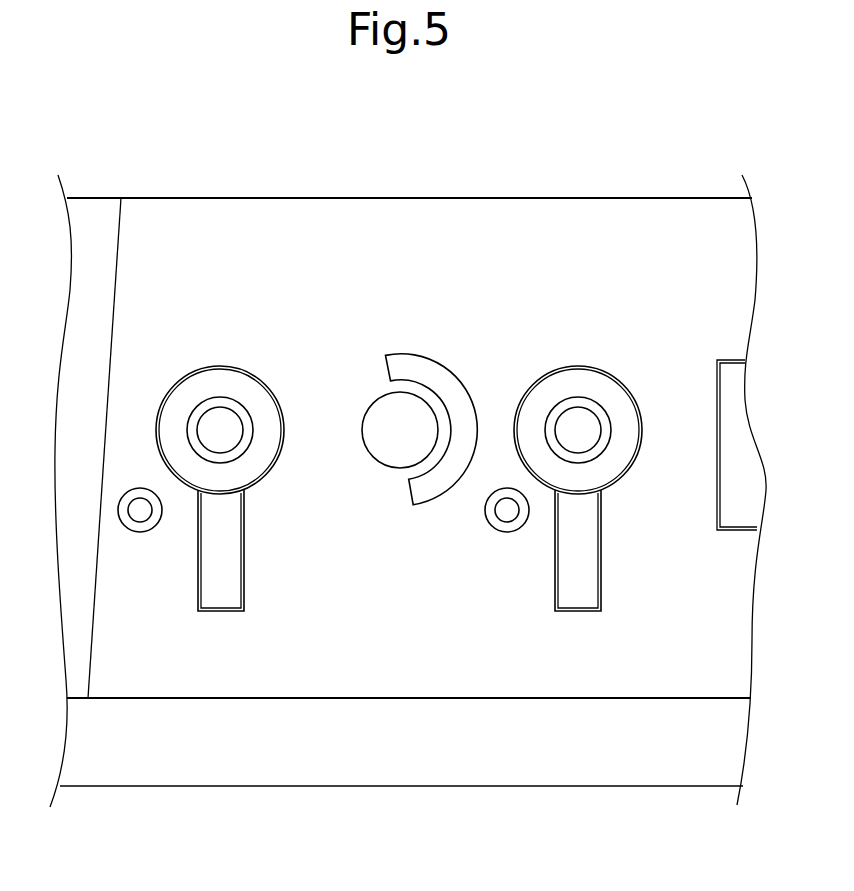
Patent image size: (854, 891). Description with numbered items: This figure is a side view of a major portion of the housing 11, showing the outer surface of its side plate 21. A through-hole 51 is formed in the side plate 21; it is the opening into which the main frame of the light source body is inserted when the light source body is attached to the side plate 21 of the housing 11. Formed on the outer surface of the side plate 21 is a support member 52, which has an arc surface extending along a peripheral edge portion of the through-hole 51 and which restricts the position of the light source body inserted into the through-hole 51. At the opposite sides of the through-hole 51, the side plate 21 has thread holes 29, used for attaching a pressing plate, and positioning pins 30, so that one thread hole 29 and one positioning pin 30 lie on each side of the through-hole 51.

The housing 11 is at (665, 786).
The side plate 21 is at (142, 223).
The thread holes 29 is at (163, 400).
The positioning pins 30 is at (140, 532).
The through-hole 51 is at (363, 437).
The support member 52 is at (429, 355).